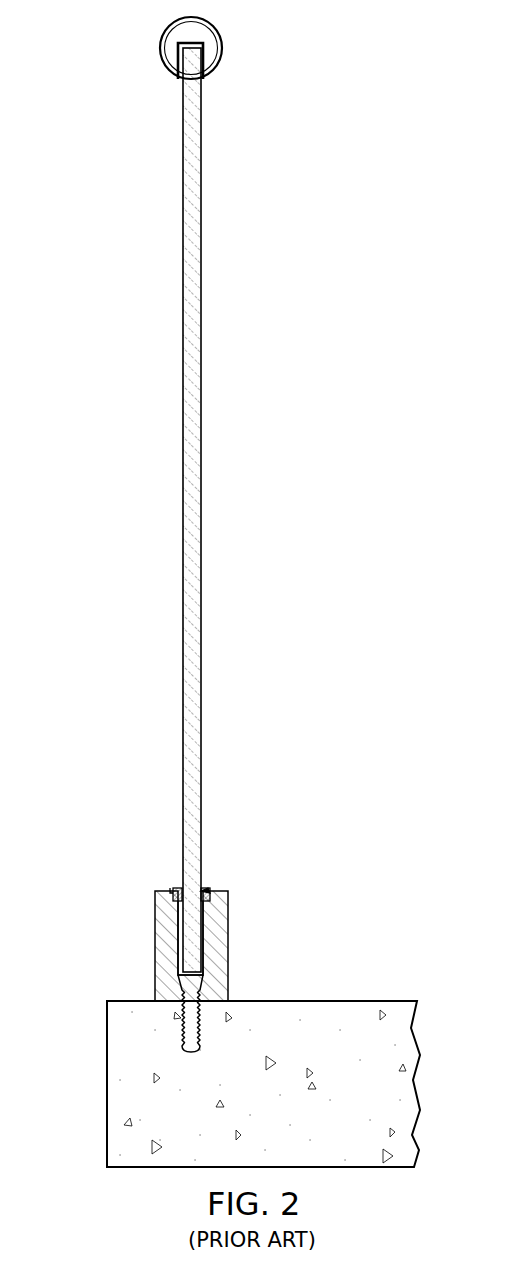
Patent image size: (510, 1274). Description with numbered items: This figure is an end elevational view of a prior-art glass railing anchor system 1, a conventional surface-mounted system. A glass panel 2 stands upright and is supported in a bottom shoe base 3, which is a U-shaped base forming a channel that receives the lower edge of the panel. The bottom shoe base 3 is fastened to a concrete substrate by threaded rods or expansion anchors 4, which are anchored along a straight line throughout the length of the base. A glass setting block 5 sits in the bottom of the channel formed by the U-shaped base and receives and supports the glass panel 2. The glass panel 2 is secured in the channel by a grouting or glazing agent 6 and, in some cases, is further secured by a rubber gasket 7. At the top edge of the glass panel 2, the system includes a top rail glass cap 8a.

The glass railing anchor system 1 is at (90, 70).
The glass panel 2 is at (201, 162).
The bottom shoe base 3 is at (228, 926).
The threaded rods or expansion anchors 4 is at (201, 1025).
The glass setting block 5 is at (203, 969).
The grouting or glazing agent 6 is at (211, 894).
The rubber gasket 7 is at (171, 888).
The top rail glass cap 8a is at (222, 48).